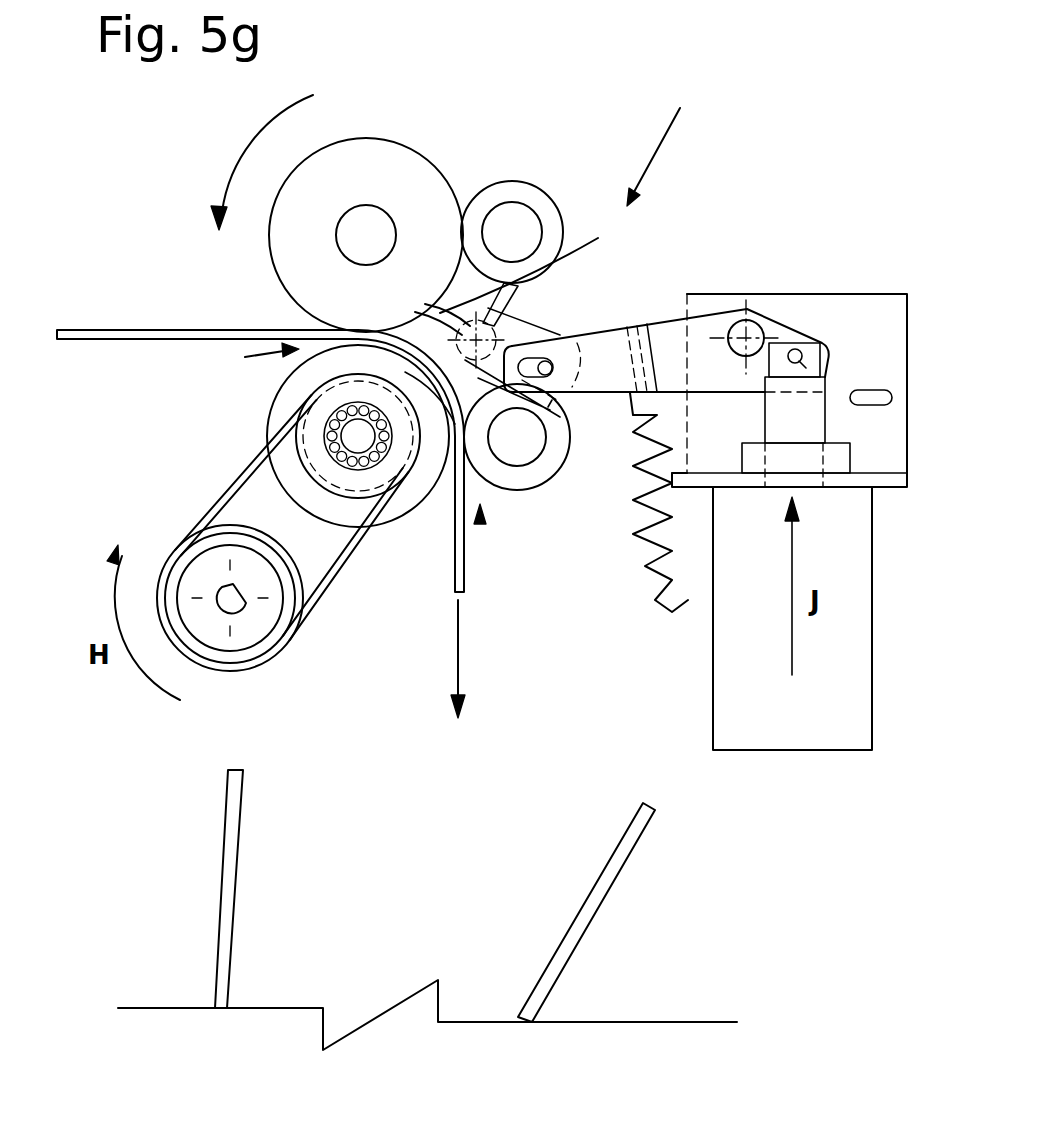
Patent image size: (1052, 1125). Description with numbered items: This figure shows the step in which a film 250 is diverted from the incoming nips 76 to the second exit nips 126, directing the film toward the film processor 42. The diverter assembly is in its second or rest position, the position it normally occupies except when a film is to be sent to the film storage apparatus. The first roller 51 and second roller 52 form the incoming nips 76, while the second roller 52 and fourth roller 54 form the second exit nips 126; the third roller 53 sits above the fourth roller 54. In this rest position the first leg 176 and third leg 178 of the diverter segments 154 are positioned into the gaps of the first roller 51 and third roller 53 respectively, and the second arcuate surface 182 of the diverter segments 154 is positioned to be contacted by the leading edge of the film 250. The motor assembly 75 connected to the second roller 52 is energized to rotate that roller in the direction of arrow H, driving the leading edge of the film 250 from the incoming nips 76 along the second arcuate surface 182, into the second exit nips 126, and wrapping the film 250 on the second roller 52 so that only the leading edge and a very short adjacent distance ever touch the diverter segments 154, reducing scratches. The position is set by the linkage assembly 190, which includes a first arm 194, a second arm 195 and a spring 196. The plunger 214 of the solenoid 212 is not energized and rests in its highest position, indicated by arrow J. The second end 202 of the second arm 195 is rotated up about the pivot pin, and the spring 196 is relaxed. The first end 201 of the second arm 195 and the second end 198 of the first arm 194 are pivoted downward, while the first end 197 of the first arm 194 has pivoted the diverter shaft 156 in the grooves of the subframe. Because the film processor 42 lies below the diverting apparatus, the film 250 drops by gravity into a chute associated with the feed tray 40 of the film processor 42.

The feed tray 40 is at (597, 914).
The film processor 42 is at (268, 1061).
The first roller 51 is at (392, 140).
The second roller 52 is at (268, 412).
The third roller 53 is at (548, 195).
The fourth roller 54 is at (548, 481).
The motor assembly 75 is at (272, 672).
The incoming nips 76 is at (256, 357).
The second exit nips 126 is at (481, 522).
The diverter segments 154 is at (488, 308).
The diverter shaft 156 is at (476, 340).
The first leg 176 is at (425, 315).
The third leg 178 is at (543, 268).
The second arcuate surface 182 is at (437, 367).
The linkage assembly 190 is at (676, 143).
The first arm 194 is at (478, 308).
The second arm 195 is at (665, 327).
The spring 196 is at (733, 325).
The first end of first arm 197 is at (498, 400).
The second end of first arm 198 is at (565, 335).
The first end of second arm 201 is at (552, 400).
The second end of second arm 202 is at (777, 323).
The solenoid 212 is at (718, 665).
The plunger 214 is at (820, 383).
The film 250 is at (153, 342).